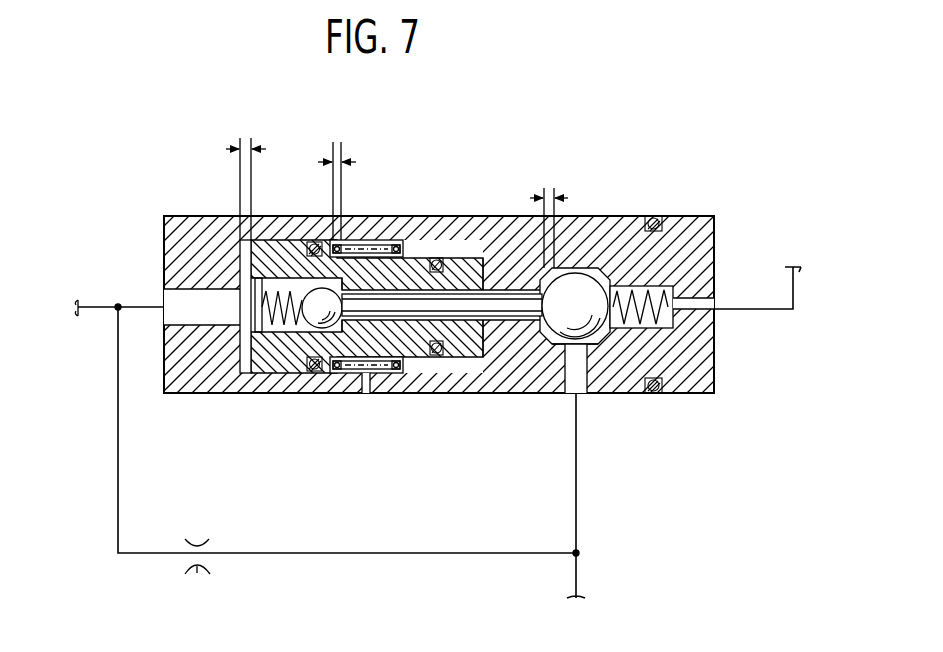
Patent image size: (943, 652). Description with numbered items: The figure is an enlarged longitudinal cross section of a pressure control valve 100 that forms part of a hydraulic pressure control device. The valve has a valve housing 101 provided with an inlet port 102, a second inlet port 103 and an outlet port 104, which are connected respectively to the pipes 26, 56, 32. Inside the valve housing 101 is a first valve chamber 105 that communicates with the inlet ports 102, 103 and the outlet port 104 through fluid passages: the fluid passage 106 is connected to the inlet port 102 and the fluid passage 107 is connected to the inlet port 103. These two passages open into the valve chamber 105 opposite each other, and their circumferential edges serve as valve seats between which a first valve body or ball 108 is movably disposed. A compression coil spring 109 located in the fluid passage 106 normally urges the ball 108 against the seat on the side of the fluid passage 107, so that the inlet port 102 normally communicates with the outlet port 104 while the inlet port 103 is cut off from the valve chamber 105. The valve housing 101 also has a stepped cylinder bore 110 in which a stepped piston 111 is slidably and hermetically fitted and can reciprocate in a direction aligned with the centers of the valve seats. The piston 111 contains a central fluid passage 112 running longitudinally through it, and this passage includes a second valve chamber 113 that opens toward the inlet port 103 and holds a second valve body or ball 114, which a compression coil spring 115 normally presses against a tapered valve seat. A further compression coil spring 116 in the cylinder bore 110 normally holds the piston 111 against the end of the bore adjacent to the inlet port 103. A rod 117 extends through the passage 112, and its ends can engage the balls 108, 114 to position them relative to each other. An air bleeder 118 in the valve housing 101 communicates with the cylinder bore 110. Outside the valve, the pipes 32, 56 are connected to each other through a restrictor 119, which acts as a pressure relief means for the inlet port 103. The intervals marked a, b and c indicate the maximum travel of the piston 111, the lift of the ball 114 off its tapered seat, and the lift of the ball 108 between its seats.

The pressure control valve 100 is at (539, 126).
The valve housing 101 is at (192, 223).
The inlet port 102 is at (703, 303).
The inlet port 103 is at (176, 297).
The outlet port 104 is at (573, 380).
The first valve chamber 105 is at (586, 270).
The fluid passage 106 is at (633, 328).
The fluid passage 107 is at (505, 323).
The first valve body or ball 108 is at (542, 347).
The compression coil spring 109 is at (660, 310).
The stepped cylinder bore 110 is at (225, 227).
The stepped piston 111 is at (470, 258).
The central fluid passage 112 is at (425, 292).
The second valve chamber 113 is at (292, 290).
The second valve body or ball 114 is at (283, 330).
The compression coil spring 115 is at (240, 392).
The compression coil spring 116 is at (367, 240).
The rod 117 is at (410, 258).
The air bleeder 118 is at (366, 380).
The restrictor 119 is at (197, 570).
The pipe 26 is at (758, 310).
The pipe 32 is at (576, 460).
The pipe 56 is at (97, 306).